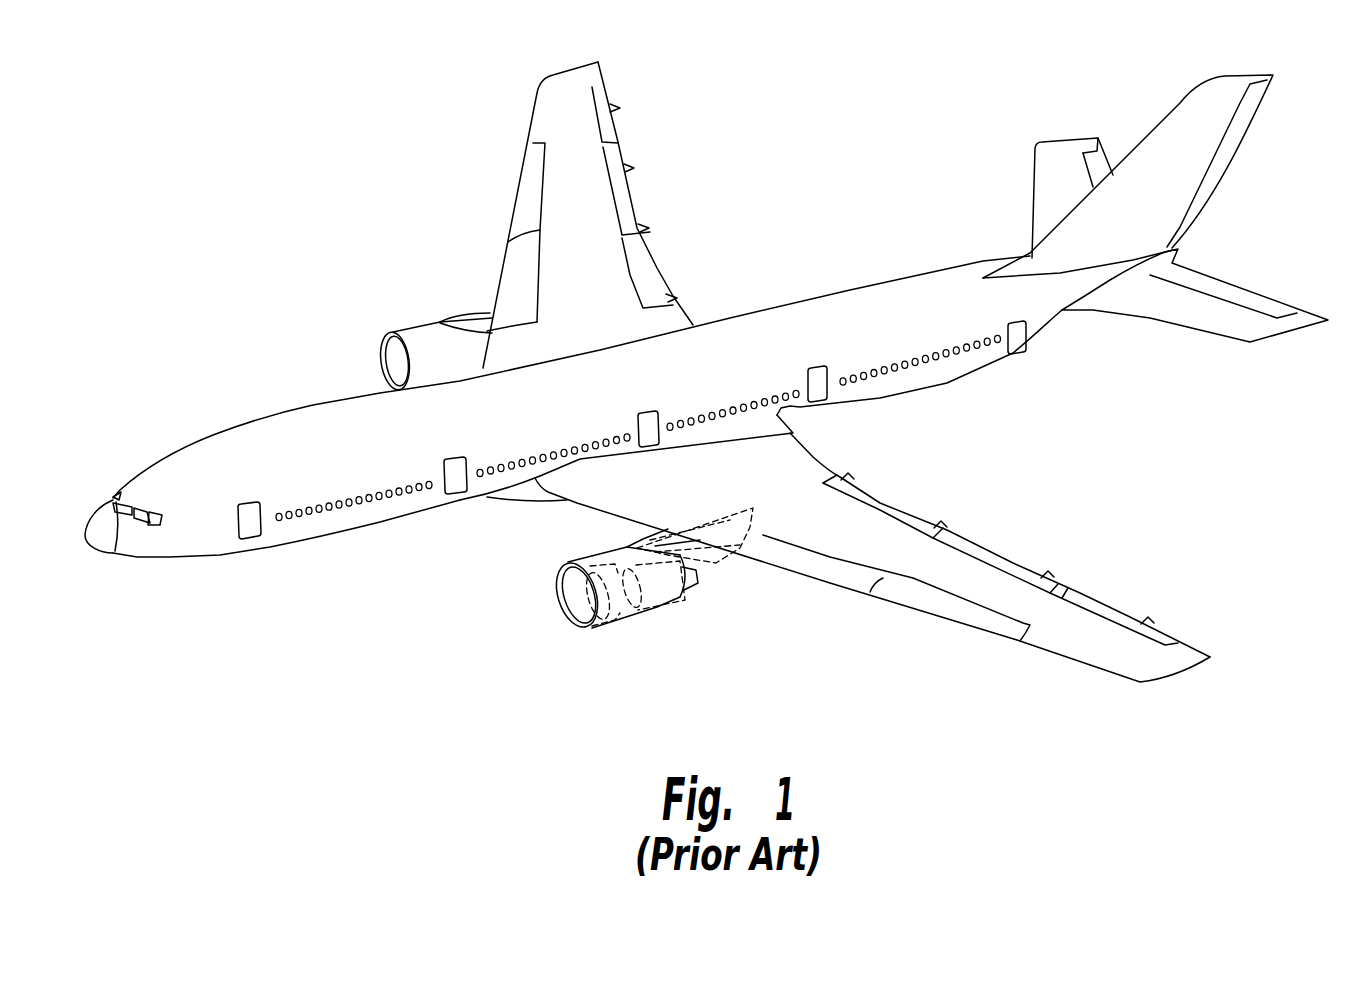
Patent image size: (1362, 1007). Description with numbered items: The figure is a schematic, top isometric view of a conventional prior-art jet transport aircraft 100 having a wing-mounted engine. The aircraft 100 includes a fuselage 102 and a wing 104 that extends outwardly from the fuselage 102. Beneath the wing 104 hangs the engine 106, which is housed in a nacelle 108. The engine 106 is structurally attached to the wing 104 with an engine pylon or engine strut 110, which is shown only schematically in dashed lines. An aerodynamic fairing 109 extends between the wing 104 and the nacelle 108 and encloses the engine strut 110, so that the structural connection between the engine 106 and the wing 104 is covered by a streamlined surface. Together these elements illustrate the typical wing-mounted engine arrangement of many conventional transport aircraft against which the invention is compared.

The jet transport aircraft 100 is at (192, 211).
The fuselage 102 is at (248, 423).
The wing 104 is at (1075, 660).
The engine 106 is at (660, 597).
The nacelle 108 is at (624, 627).
The aerodynamic fairing 109 is at (640, 543).
The engine strut 110 is at (676, 529).